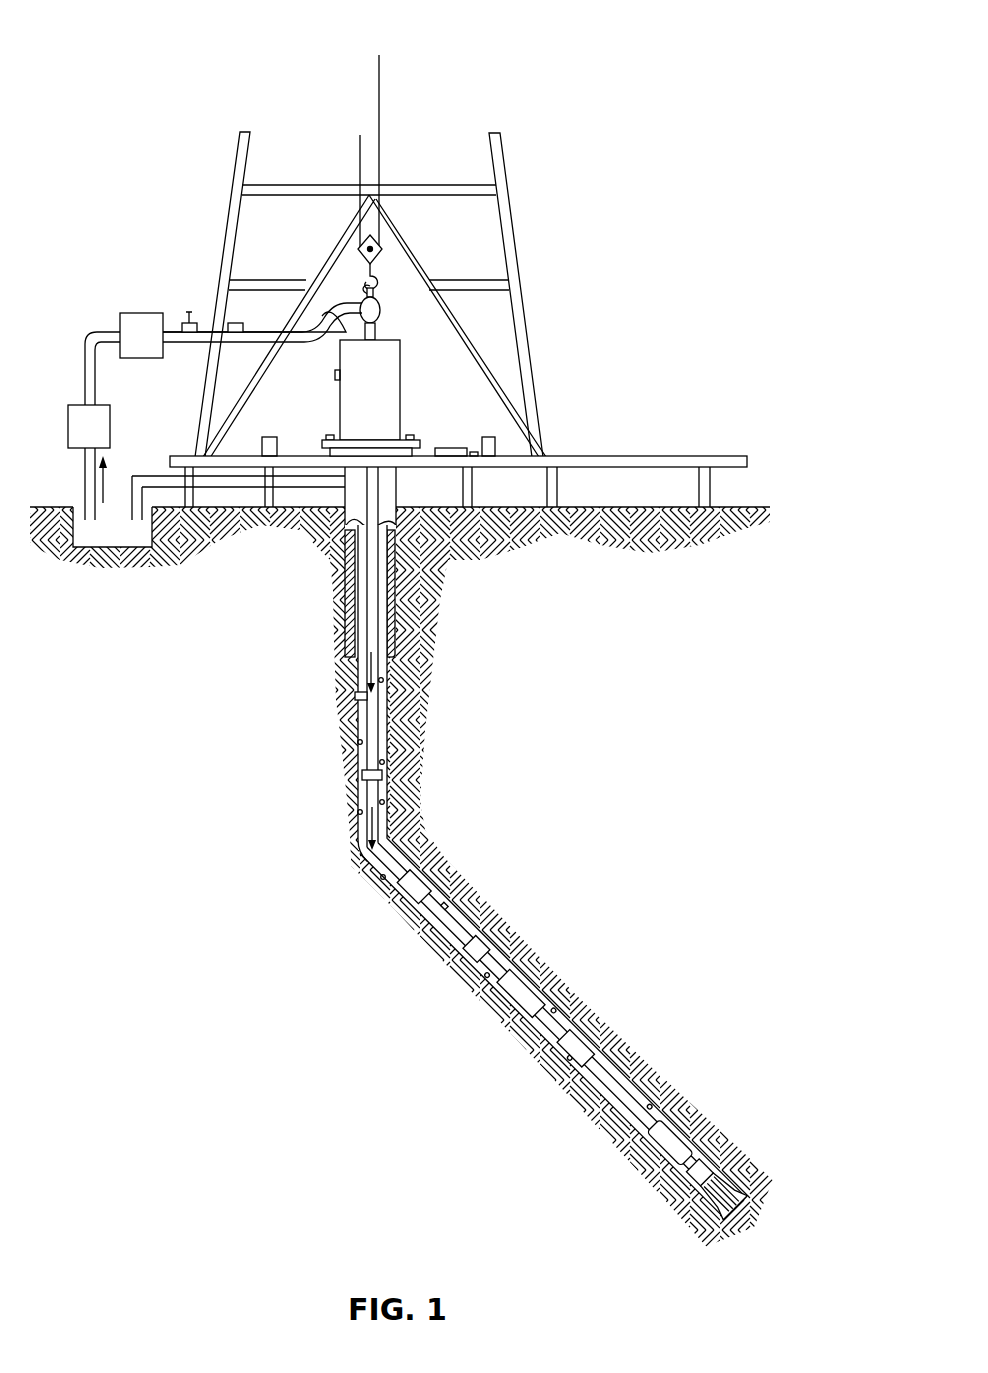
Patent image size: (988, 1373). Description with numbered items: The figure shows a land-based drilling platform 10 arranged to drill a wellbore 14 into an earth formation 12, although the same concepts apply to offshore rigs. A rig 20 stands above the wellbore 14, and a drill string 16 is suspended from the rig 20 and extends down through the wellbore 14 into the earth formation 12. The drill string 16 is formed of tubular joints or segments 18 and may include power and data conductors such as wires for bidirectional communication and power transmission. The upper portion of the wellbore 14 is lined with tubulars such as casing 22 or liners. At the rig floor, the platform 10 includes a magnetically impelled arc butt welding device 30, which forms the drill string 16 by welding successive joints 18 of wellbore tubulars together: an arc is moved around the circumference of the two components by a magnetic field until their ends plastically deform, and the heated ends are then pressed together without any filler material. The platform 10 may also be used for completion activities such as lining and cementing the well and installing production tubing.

The platform 10 is at (100, 40).
The earth formation 12 is at (626, 911).
The wellbore 14 is at (393, 788).
The drill string 16 is at (382, 828).
The tubular joints or segments 18 is at (455, 925).
The rig 20 is at (522, 293).
The casing 22 is at (388, 610).
The magnetically impelled arc butt welding device 30 is at (390, 405).